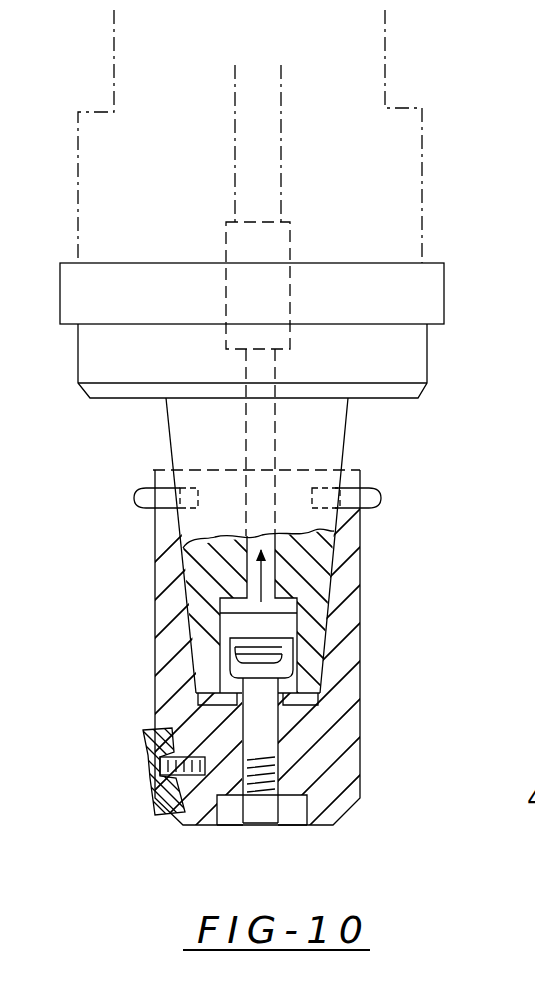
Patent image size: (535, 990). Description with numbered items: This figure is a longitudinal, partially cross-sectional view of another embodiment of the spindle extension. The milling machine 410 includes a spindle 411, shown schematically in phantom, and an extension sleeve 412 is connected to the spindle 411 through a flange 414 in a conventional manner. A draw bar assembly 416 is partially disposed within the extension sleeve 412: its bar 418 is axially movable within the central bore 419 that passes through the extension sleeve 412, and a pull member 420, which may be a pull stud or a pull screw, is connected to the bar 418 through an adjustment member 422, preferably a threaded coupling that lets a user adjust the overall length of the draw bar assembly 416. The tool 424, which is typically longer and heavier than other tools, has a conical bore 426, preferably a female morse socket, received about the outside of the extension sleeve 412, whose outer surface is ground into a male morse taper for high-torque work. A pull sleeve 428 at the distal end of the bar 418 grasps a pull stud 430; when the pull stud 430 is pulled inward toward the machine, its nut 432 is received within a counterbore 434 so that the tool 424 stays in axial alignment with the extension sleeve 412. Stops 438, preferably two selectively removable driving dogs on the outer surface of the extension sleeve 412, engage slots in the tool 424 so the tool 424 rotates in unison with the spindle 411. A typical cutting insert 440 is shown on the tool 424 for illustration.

The milling machine 410 is at (437, 146).
The spindle 411 is at (423, 240).
The extension sleeve 412 is at (349, 432).
The flange 414 is at (420, 367).
The draw bar assembly 416 is at (243, 376).
The bar 418 is at (236, 424).
The central bore 419 is at (272, 430).
The pull member 420 is at (282, 102).
The adjustment member 422 is at (283, 245).
The tool 424 is at (352, 686).
The conical bore 426 is at (322, 612).
The pull sleeve 428 is at (230, 628).
The pull stud 430 is at (237, 655).
The nut 432 is at (232, 815).
The counterbore 434 is at (297, 812).
The stops 438 is at (134, 497).
The cutting insert 440 is at (150, 808).